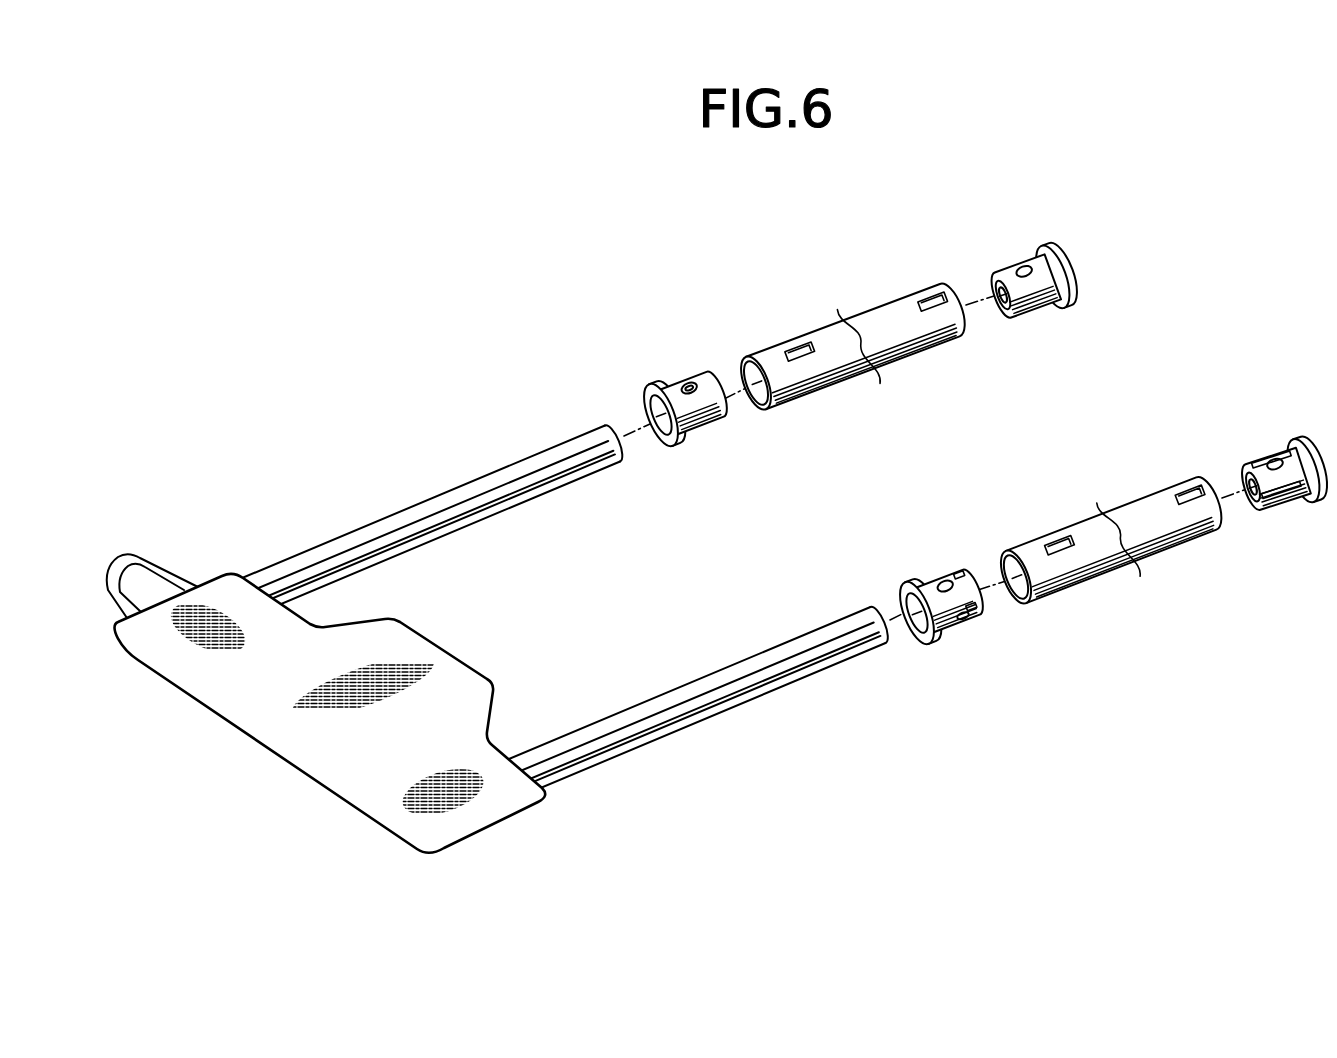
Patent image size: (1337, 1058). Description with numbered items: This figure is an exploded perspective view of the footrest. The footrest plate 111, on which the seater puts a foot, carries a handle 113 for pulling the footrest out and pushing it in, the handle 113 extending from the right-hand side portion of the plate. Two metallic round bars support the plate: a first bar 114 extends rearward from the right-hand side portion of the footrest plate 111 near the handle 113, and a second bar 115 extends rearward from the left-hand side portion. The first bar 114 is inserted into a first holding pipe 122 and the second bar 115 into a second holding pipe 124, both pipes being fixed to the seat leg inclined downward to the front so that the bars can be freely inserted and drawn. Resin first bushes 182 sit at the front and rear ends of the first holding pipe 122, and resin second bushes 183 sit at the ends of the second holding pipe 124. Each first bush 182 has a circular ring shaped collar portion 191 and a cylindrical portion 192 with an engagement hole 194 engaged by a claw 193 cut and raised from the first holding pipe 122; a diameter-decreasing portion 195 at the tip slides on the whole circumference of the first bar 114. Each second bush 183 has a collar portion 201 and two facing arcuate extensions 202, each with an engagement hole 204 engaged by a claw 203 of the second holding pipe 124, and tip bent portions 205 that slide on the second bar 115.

The footrest plate 111 is at (333, 763).
The handle 113 is at (130, 550).
The first bar 114 is at (470, 497).
The second bar 115 is at (678, 713).
The first holding pipe 122 is at (893, 287).
The second holding pipe 124 is at (1200, 552).
The first bush 182 is at (640, 375).
The second bush 183 is at (1292, 430).
The collar portion 191 is at (663, 443).
The cylindrical portion 192 is at (708, 427).
The claw 193 is at (935, 305).
The engagement hole 194 is at (690, 386).
The diameter-decreasing portion 195 is at (716, 385).
The collar portion 201 is at (900, 600).
The extensions 202 is at (915, 588).
The claw 203 is at (1188, 500).
The engagement hole 204 is at (948, 583).
The bent portion 205 is at (970, 585).